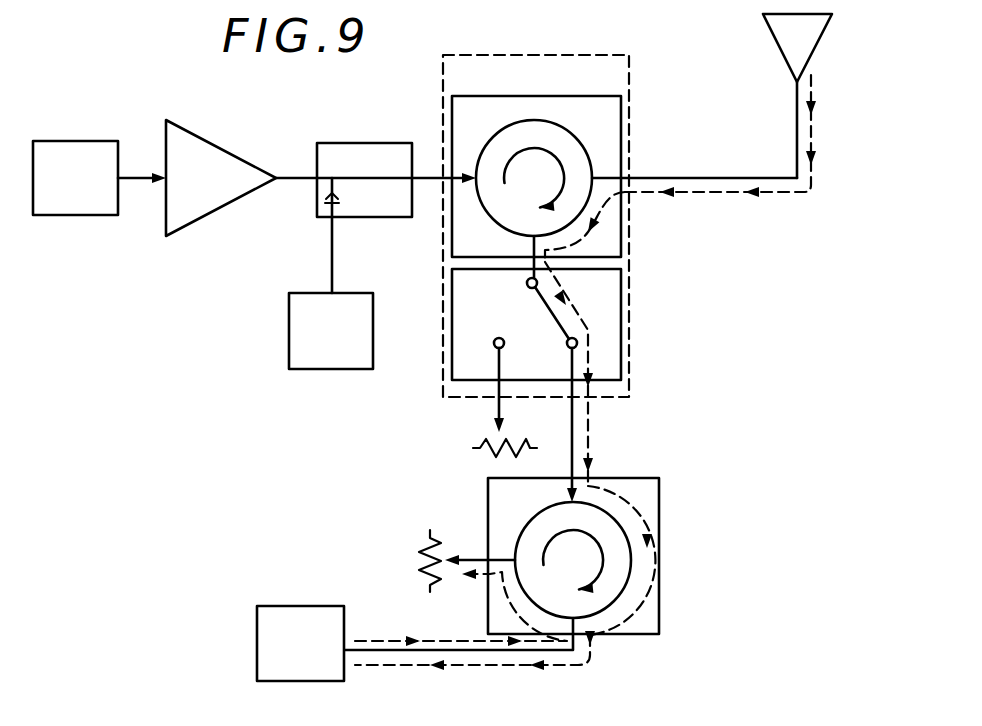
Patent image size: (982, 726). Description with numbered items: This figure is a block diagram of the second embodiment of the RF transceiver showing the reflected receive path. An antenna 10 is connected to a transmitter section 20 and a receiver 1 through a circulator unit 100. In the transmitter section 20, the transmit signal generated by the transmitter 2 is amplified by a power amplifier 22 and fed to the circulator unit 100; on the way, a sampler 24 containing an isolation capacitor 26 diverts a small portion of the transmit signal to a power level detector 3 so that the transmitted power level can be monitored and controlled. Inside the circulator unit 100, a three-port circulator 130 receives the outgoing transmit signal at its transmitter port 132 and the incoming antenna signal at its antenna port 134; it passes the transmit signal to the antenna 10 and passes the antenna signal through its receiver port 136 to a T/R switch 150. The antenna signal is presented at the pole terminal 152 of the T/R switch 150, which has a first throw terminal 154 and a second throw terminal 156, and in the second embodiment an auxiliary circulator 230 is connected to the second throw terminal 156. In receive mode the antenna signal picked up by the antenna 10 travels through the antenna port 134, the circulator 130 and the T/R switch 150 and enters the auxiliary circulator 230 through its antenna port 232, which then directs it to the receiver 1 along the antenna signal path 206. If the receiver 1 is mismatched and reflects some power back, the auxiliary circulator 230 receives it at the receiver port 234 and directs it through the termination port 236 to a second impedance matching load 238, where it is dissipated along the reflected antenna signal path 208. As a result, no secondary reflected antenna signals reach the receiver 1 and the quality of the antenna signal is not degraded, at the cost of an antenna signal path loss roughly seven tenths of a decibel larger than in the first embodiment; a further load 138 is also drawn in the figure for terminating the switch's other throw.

The receiver 1 is at (257, 650).
The transmitter 2 is at (66, 216).
The power level detector 3 is at (289, 335).
The antenna 10 is at (790, 86).
The transmitter section 20 is at (297, 155).
The power amplifier 22 is at (187, 227).
The sampler 24 is at (362, 220).
The isolation capacitor 26 is at (327, 215).
The circulator unit 100 is at (597, 57).
The three-port circulator 130 is at (621, 112).
The transmitter port 132 is at (437, 185).
The antenna port 134 is at (633, 177).
The receiver port 136 is at (562, 251).
The terminating resistor 138 is at (472, 446).
The T/R switch 150 is at (621, 325).
The pole terminal 152 is at (545, 282).
The first throw terminal 154 is at (494, 341).
The second throw terminal 156 is at (578, 345).
The antenna signal path 206 is at (722, 194).
The reflected antenna signal path 208 is at (390, 637).
The auxiliary circulator 230 is at (659, 572).
The antenna port 232 is at (597, 472).
The receiver port 234 is at (580, 647).
The termination port 236 is at (482, 552).
The second impedance matching load 238 is at (418, 563).